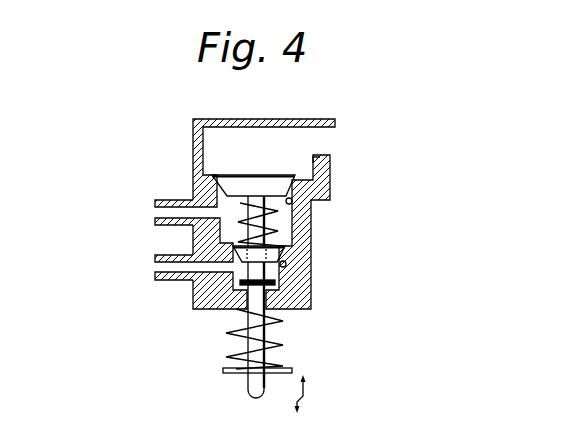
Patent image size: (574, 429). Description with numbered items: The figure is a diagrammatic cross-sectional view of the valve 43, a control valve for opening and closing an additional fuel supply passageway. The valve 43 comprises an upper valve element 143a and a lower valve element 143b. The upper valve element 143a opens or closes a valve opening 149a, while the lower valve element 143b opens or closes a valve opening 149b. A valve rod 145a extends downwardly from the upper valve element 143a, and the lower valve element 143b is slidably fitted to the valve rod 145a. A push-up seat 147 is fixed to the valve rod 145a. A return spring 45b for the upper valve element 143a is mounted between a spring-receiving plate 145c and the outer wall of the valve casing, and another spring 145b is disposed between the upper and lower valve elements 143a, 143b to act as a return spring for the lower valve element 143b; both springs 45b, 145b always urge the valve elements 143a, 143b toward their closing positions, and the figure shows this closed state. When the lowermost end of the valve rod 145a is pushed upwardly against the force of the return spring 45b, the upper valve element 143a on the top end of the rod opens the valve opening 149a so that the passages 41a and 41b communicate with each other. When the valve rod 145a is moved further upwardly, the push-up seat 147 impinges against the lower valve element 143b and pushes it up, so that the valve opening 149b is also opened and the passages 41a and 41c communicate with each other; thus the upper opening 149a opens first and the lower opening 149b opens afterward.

The valve 43 is at (228, 170).
The passage 41a is at (328, 138).
The passage 41b is at (149, 208).
The passage 41c is at (149, 267).
The upper valve element 143a is at (252, 178).
The lower valve element 143b is at (193, 286).
The valve rod 145a is at (232, 308).
The spring 145b is at (281, 226).
The spring-receiving plate 145c is at (293, 370).
The push-up seat 147 is at (298, 296).
The valve opening 149a is at (294, 205).
The valve opening 149b is at (287, 263).
The return spring 45b is at (288, 338).